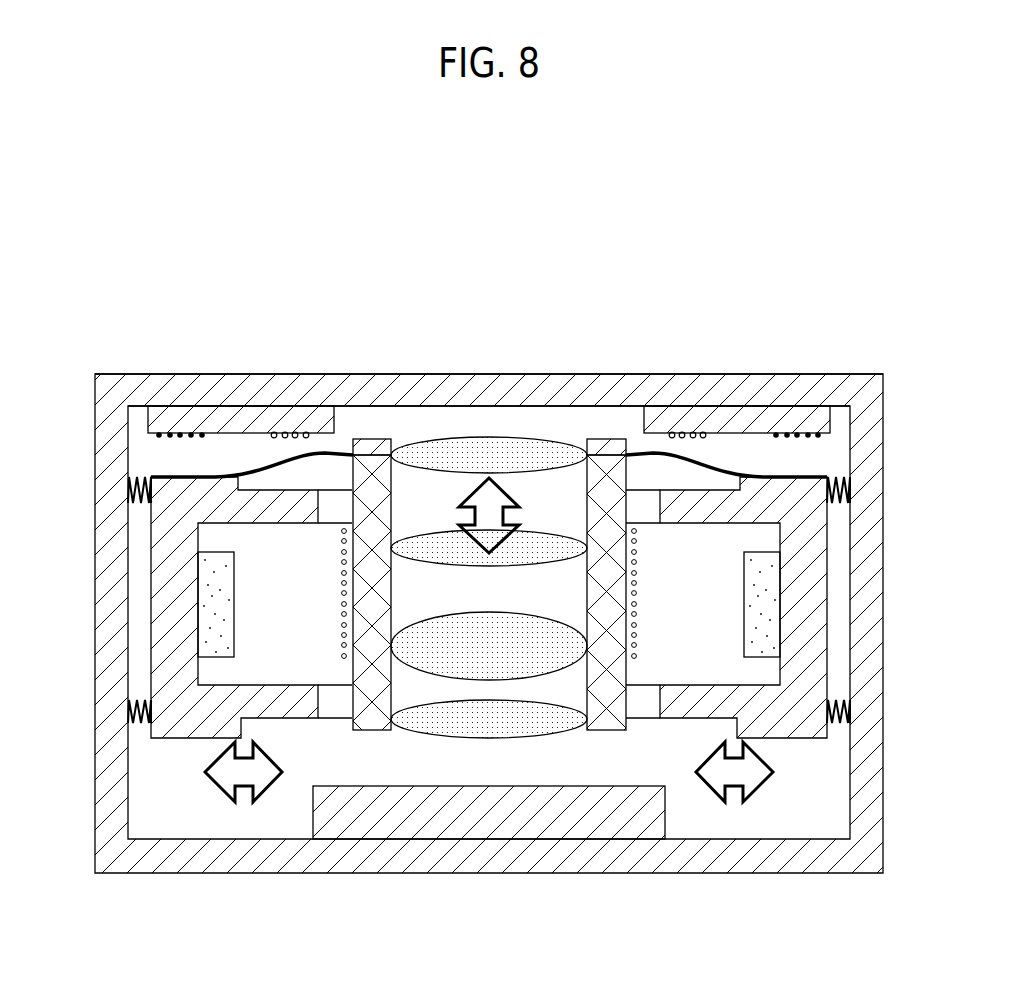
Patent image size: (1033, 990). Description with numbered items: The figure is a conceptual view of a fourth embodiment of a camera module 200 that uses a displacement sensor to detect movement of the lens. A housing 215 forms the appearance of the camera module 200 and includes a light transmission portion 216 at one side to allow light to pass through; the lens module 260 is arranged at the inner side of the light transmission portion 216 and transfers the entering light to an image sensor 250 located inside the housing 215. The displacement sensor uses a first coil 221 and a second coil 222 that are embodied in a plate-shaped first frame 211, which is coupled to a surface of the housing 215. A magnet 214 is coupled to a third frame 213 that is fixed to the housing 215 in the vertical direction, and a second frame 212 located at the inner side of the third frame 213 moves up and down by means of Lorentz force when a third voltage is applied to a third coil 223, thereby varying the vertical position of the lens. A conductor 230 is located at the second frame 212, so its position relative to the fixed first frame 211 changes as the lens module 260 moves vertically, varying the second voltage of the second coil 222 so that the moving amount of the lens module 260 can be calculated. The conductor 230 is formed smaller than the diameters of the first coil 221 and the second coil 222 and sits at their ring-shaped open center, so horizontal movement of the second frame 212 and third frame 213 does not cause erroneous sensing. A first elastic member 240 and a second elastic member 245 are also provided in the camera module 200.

The camera module 200 is at (133, 287).
The first frame 211 is at (762, 418).
The second frame 212 is at (607, 722).
The third frame 213 is at (820, 633).
The magnet 214 is at (200, 617).
The housing 215 is at (873, 443).
The light transmission portion 216 is at (421, 398).
The first coil 221 is at (280, 431).
The second coil 222 is at (159, 431).
The third coil 223 is at (341, 563).
The conductor 230 is at (356, 439).
The first elastic member 240 is at (681, 455).
The second elastic member 245 is at (850, 712).
The image sensor 250 is at (490, 836).
The lens module 260 is at (560, 445).